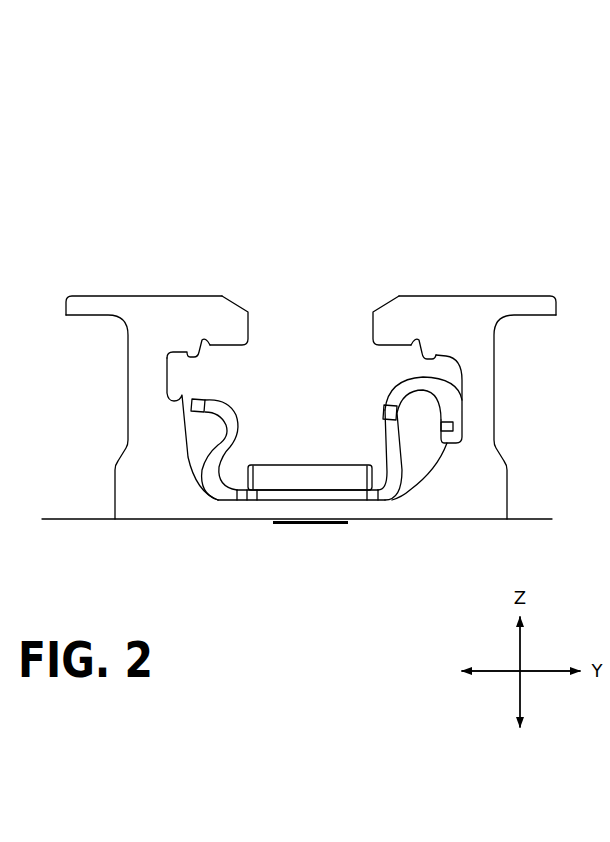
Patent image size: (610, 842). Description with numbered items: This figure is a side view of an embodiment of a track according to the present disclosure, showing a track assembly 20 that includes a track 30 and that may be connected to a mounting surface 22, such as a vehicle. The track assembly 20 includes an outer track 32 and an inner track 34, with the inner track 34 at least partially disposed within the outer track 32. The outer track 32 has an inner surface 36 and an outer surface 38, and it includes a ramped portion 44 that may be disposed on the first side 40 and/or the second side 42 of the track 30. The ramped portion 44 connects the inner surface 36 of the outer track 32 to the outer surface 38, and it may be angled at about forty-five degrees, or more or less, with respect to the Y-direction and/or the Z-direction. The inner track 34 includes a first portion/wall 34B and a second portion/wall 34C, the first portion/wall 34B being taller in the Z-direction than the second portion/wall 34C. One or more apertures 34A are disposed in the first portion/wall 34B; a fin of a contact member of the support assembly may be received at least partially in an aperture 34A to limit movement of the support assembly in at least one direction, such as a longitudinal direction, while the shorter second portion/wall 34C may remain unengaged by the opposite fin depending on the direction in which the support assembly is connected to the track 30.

The track assembly 20 is at (277, 133).
The mounting surface 22 is at (522, 517).
The track 30 is at (473, 212).
The outer track 32 is at (478, 386).
The inner track 34 is at (270, 493).
The aperture 34A is at (418, 362).
The first portion/wall 34B is at (392, 423).
The second portion/wall 34C is at (217, 450).
The inner surface 36 is at (216, 355).
The outer surface 38 is at (180, 290).
The first side 40 is at (566, 307).
The second side 42 is at (72, 340).
The ramped portion 44 is at (240, 300).